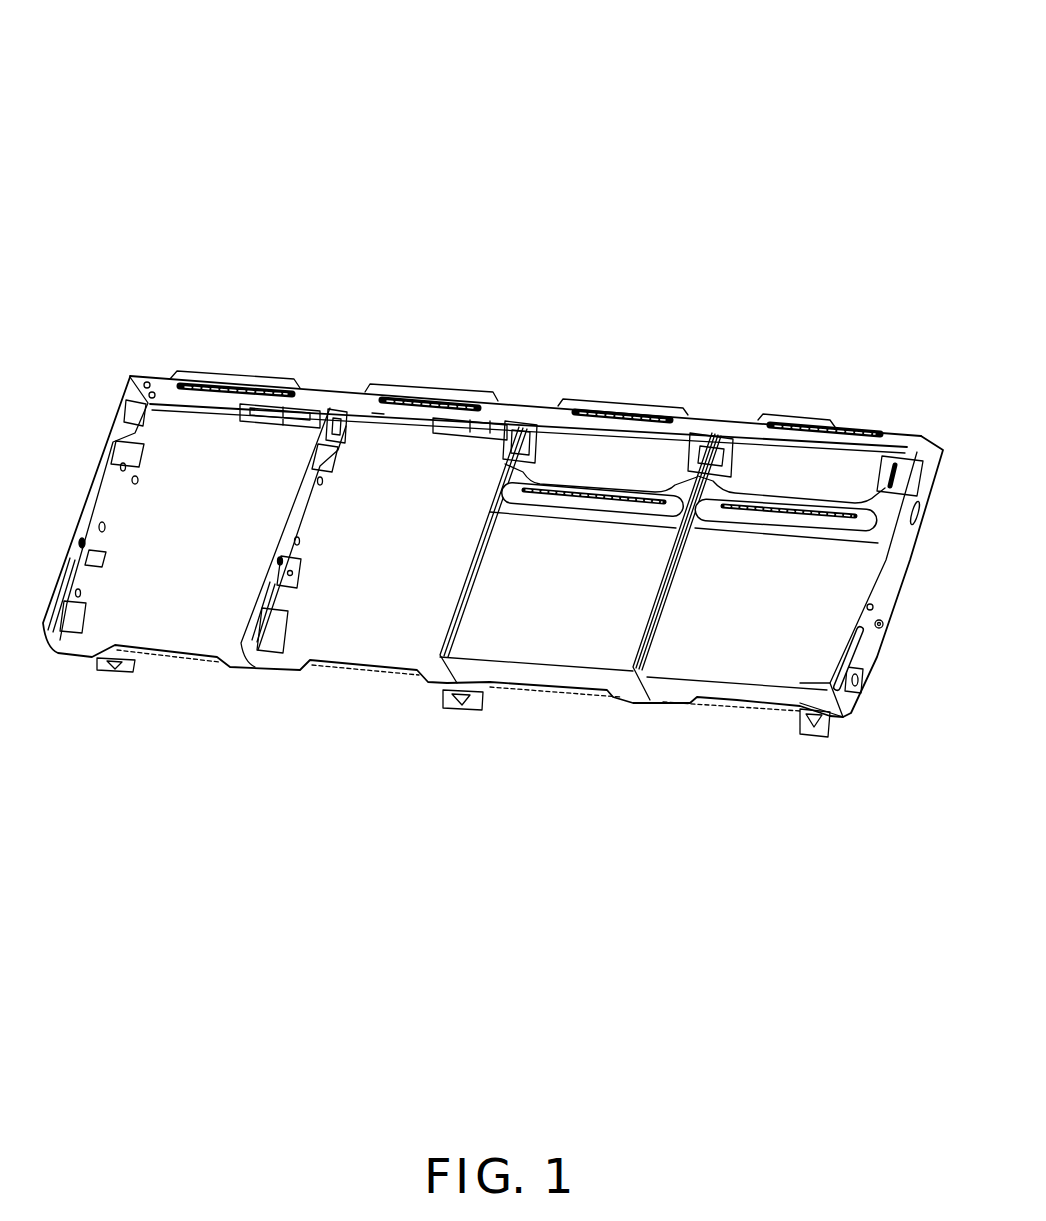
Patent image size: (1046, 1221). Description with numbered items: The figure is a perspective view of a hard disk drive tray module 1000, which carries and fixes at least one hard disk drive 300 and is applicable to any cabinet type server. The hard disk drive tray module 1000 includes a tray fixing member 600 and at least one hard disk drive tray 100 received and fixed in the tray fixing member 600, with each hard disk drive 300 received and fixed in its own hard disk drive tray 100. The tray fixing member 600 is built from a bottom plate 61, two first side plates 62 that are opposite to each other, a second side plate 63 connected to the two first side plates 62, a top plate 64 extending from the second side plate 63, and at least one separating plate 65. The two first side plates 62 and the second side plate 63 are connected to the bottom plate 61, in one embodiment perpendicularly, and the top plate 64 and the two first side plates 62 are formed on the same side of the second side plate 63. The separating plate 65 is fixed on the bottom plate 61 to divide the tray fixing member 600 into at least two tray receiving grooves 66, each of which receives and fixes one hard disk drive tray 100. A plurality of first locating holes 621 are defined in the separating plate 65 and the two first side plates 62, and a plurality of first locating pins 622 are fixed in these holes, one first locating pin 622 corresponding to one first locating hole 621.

The hard disk drive tray module 1000 is at (568, 72).
The hard disk drive tray 100 is at (883, 554).
The hard disk drive 300 is at (783, 457).
The tray fixing member 600 is at (750, 800).
The bottom plate 61 is at (593, 692).
The first side plates 62 is at (865, 650).
The first locating holes 621 is at (882, 628).
The first locating pins 622 is at (345, 432).
The second side plate 63 is at (378, 415).
The top plate 64 is at (692, 420).
The separating plate 65 is at (336, 448).
The tray receiving grooves 66 is at (368, 636).